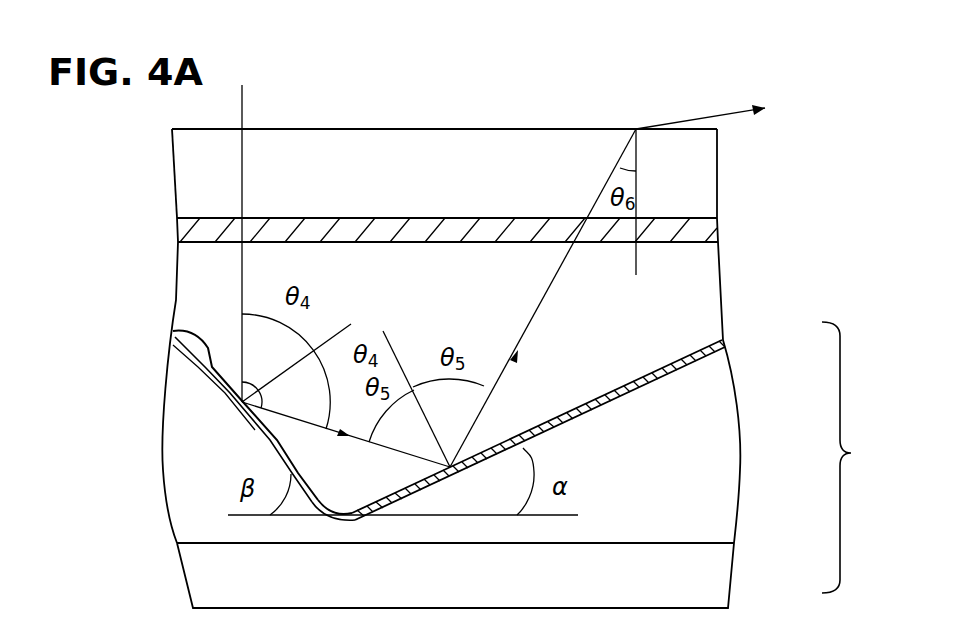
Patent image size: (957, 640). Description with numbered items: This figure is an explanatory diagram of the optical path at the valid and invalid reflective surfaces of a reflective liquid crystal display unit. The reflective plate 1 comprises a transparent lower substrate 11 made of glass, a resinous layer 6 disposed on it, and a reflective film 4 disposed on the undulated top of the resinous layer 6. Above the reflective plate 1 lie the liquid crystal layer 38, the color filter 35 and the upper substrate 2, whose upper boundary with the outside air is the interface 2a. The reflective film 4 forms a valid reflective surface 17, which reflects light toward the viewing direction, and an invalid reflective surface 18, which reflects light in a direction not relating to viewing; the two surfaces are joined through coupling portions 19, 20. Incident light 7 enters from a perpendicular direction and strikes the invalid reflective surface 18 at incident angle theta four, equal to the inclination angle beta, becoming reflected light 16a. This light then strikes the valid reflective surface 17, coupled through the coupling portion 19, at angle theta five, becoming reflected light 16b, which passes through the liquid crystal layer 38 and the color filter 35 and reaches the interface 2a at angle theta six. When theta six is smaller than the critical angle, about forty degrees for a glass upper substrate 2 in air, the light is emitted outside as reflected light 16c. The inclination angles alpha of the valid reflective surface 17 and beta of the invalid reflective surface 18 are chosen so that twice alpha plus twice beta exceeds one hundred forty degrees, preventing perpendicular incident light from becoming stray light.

The reflective plate 1 is at (848, 457).
The upper substrate 2 is at (717, 160).
The interface of the upper substrate and outside 2a is at (390, 129).
The reflective film 4 is at (722, 340).
The resinous layer 6 is at (690, 463).
The incident light 7 is at (246, 160).
The lower substrate 11 is at (693, 578).
The reflected light 16a is at (295, 421).
The reflected light 16b is at (534, 318).
The reflected light 16c is at (700, 95).
The valid reflective surface 17 is at (589, 402).
The invalid reflective surface 18 is at (182, 324).
The coupling portion 19 is at (343, 508).
The coupling portion 20 is at (170, 352).
The color filter 35 is at (717, 230).
The liquid crystal layer 38 is at (690, 282).